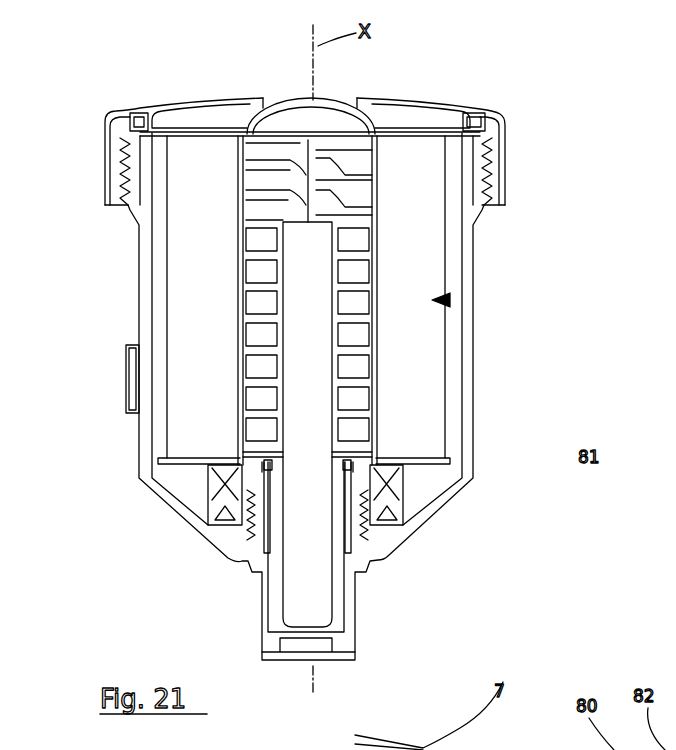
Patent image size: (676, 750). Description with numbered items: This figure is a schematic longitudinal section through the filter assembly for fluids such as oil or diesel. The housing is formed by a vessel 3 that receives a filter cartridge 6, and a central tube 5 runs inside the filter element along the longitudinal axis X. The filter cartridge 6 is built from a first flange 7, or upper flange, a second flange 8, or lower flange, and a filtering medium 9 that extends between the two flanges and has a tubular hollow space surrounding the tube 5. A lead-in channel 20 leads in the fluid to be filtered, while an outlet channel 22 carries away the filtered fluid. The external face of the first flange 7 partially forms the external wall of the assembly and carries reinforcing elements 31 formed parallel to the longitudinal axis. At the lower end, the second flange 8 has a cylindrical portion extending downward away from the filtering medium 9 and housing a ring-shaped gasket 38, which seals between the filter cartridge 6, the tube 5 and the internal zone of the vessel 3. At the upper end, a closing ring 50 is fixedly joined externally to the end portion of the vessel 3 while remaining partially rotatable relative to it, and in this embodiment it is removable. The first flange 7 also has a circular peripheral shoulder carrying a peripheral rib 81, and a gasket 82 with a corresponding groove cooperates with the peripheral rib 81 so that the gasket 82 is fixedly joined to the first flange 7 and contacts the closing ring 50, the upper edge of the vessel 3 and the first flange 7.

The vessel 3 is at (457, 492).
The tube 5 is at (380, 350).
The filter cartridge 6 is at (450, 300).
The first flange 7 is at (410, 120).
The second flange 8 is at (183, 470).
The filtering medium 9 is at (425, 236).
The lead-in channel 20 is at (126, 410).
The outlet channel 22 is at (270, 613).
The reinforcing elements 31 is at (214, 116).
The gasket 38 is at (212, 520).
The closing ring 50 is at (507, 168).
The peripheral rib 81 is at (500, 128).
The gasket 82 is at (125, 138).